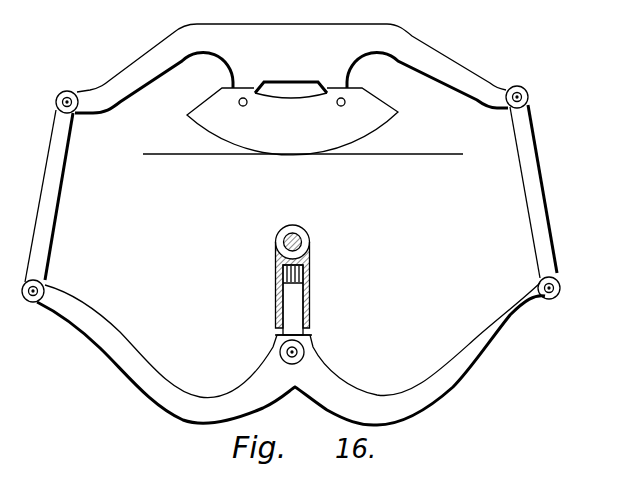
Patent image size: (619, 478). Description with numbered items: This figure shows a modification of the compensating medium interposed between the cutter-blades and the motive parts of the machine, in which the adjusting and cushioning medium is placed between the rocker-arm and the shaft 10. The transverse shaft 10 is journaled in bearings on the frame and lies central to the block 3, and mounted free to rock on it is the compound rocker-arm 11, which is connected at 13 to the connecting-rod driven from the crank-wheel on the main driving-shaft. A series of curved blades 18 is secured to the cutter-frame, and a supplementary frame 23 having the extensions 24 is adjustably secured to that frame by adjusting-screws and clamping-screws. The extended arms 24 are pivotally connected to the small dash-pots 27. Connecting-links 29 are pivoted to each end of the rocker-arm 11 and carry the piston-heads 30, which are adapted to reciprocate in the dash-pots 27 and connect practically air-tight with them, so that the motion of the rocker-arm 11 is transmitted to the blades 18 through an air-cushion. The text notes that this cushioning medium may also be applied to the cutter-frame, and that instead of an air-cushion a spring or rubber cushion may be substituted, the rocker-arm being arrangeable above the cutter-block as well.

The block 3 is at (363, 155).
The transverse shaft 10 is at (298, 234).
The compound rocker-arm 11 is at (182, 402).
The connection point of rocker-arm 13 is at (302, 353).
The curved blades 18 is at (292, 121).
The supplementary frame 23 is at (291, 72).
The extensions 24 is at (133, 82).
The dash-pots 27 is at (310, 282).
The connecting-links 29 is at (50, 212).
The piston-heads 30 is at (290, 300).